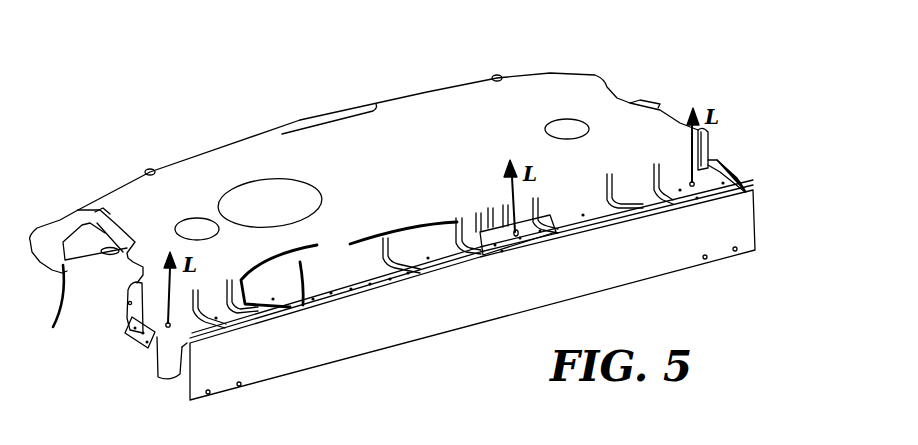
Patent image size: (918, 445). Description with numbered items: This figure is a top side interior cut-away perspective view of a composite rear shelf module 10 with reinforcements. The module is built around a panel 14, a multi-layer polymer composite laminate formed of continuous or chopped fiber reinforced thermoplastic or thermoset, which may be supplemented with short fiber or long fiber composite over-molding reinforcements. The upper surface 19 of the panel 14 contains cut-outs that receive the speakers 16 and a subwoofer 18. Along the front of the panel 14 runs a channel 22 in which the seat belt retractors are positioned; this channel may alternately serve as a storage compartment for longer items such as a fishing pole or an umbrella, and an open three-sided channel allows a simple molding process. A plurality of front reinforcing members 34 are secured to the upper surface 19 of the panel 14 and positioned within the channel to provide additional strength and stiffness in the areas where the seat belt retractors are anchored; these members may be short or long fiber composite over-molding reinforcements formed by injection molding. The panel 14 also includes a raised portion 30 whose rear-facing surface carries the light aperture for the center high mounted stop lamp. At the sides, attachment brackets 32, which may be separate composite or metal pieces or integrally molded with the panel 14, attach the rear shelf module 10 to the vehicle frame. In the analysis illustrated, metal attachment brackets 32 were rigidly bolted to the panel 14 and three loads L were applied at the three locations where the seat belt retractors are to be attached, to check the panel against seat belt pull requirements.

The rear shelf module 10 is at (132, 156).
The panel 14 is at (506, 148).
The speakers 16 is at (197, 228).
The subwoofer 18 is at (279, 199).
The upper surface 19 is at (428, 107).
The channel 22 is at (182, 328).
The raised portion 30 is at (353, 118).
The attachment brackets 32 is at (126, 315).
The front reinforcing members 34 is at (349, 264).